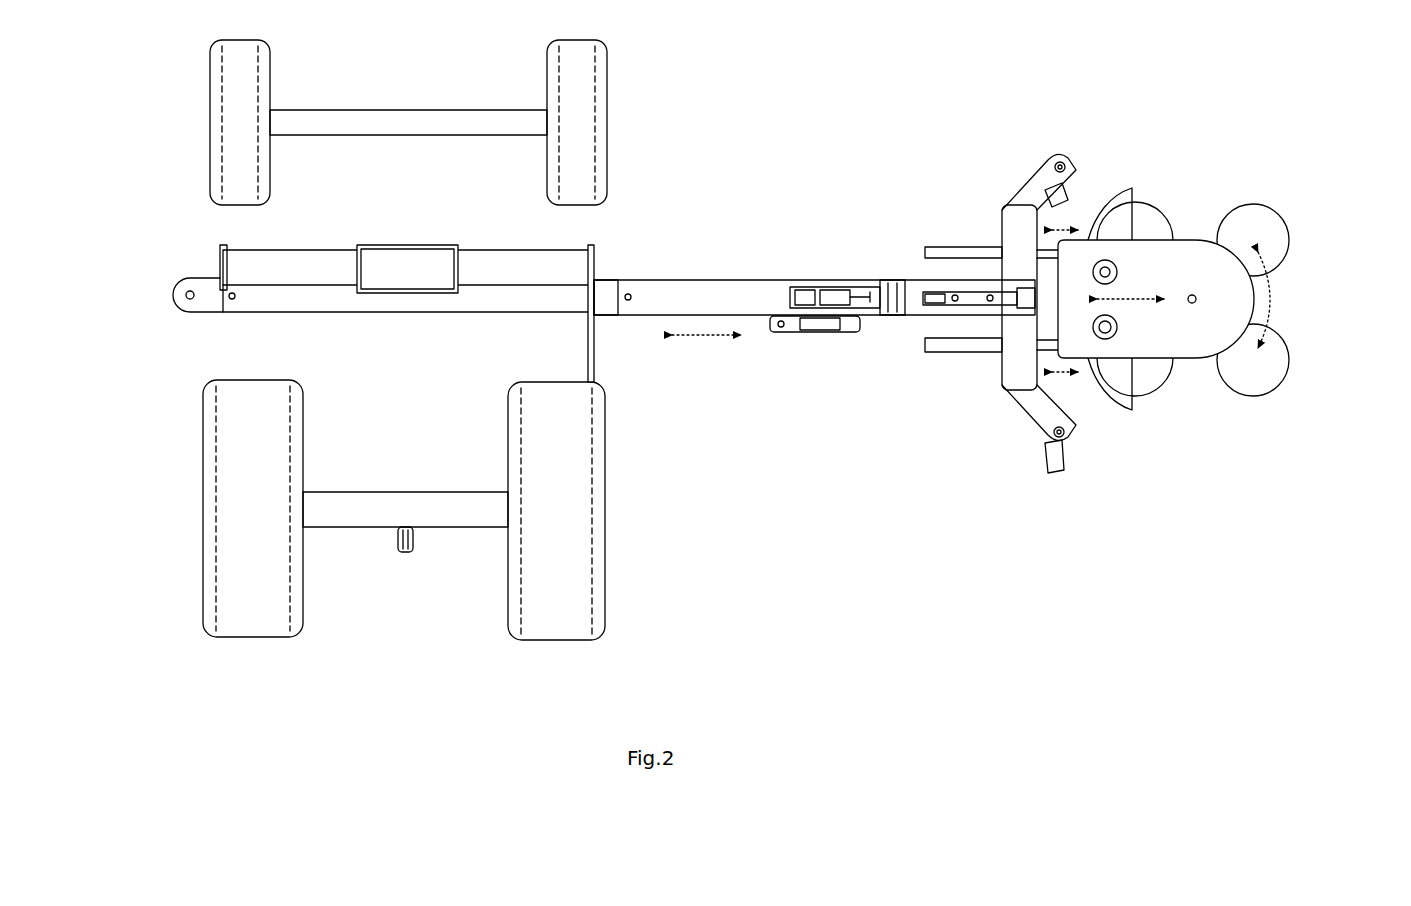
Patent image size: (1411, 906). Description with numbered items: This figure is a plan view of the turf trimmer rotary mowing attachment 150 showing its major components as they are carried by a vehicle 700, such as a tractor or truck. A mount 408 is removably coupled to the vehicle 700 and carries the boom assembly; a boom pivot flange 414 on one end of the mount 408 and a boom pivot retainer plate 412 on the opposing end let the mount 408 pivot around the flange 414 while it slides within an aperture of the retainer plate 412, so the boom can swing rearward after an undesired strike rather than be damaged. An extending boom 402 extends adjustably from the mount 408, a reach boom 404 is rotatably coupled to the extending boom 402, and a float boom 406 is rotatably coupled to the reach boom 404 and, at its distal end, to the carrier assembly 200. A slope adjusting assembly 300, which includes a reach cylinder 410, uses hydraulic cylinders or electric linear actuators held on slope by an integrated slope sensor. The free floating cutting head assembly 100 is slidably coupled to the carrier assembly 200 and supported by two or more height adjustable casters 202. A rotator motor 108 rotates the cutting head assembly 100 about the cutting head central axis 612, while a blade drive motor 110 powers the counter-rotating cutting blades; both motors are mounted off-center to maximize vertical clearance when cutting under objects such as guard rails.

The cutting head assembly 100 is at (1275, 188).
The rotator motor 108 is at (1108, 268).
The blade drive motor 110 is at (1108, 338).
The rotary mowing attachment 150 is at (852, 428).
The carrier assembly 200 is at (1020, 150).
The height adjustable casters 202 is at (1080, 188).
The slope adjusting assembly 300 is at (940, 292).
The extending boom 402 is at (650, 318).
The reach boom 404 is at (818, 288).
The float boom 406 is at (972, 340).
The mount 408 is at (408, 298).
The reach cylinder 410 is at (808, 332).
The boom pivot retainer plate 412 is at (600, 256).
The boom pivot flange 414 is at (185, 283).
The cutting head central axis 612 is at (1193, 296).
The vehicle 700 is at (170, 372).